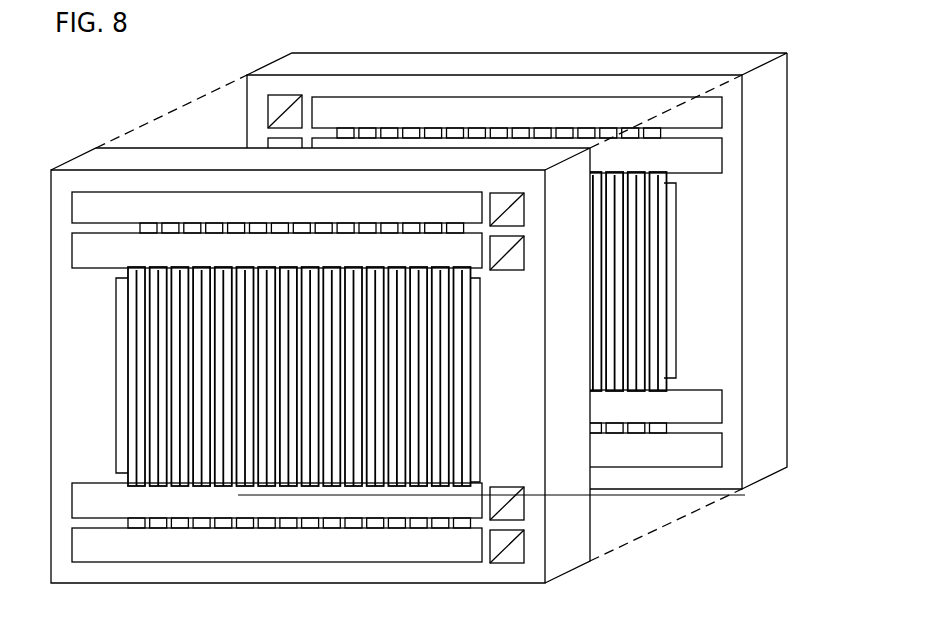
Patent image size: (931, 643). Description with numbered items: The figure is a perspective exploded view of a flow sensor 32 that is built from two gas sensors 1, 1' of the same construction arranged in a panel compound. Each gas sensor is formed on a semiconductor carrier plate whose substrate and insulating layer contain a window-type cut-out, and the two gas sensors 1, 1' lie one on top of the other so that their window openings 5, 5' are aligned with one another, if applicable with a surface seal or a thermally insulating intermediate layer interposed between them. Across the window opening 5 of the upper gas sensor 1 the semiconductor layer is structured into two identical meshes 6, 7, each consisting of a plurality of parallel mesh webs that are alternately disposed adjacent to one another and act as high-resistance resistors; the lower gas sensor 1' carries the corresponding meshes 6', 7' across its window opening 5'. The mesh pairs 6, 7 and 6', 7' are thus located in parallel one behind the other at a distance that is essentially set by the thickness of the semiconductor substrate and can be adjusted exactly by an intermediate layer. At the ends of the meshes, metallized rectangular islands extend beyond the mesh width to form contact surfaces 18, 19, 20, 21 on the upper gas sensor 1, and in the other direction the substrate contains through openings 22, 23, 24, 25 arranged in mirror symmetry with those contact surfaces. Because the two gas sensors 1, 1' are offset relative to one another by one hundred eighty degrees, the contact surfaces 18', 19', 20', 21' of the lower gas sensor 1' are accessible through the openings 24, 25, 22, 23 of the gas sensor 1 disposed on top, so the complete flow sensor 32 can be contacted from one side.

The gas sensor 1 is at (396, 338).
The gas sensor 1' is at (536, 271).
The window opening 5 is at (321, 376).
The window opening 5' is at (655, 281).
The mesh 6 is at (483, 376).
The mesh 6' is at (683, 281).
The mesh 7 is at (473, 376).
The mesh 7' is at (672, 281).
The contact surface 18 is at (275, 478).
The contact surface 18' is at (497, 180).
The contact surface 19 is at (276, 167).
The contact surface 19' is at (547, 478).
The contact surface 20 is at (276, 275).
The contact surface 20' is at (517, 387).
The contact surface 21 is at (275, 577).
The contact surface 21' is at (495, 74).
The through opening 22 is at (508, 487).
The through opening 23 is at (525, 208).
The through opening 24 is at (508, 272).
The through opening 25 is at (505, 565).
The flow sensor 32 is at (686, 551).